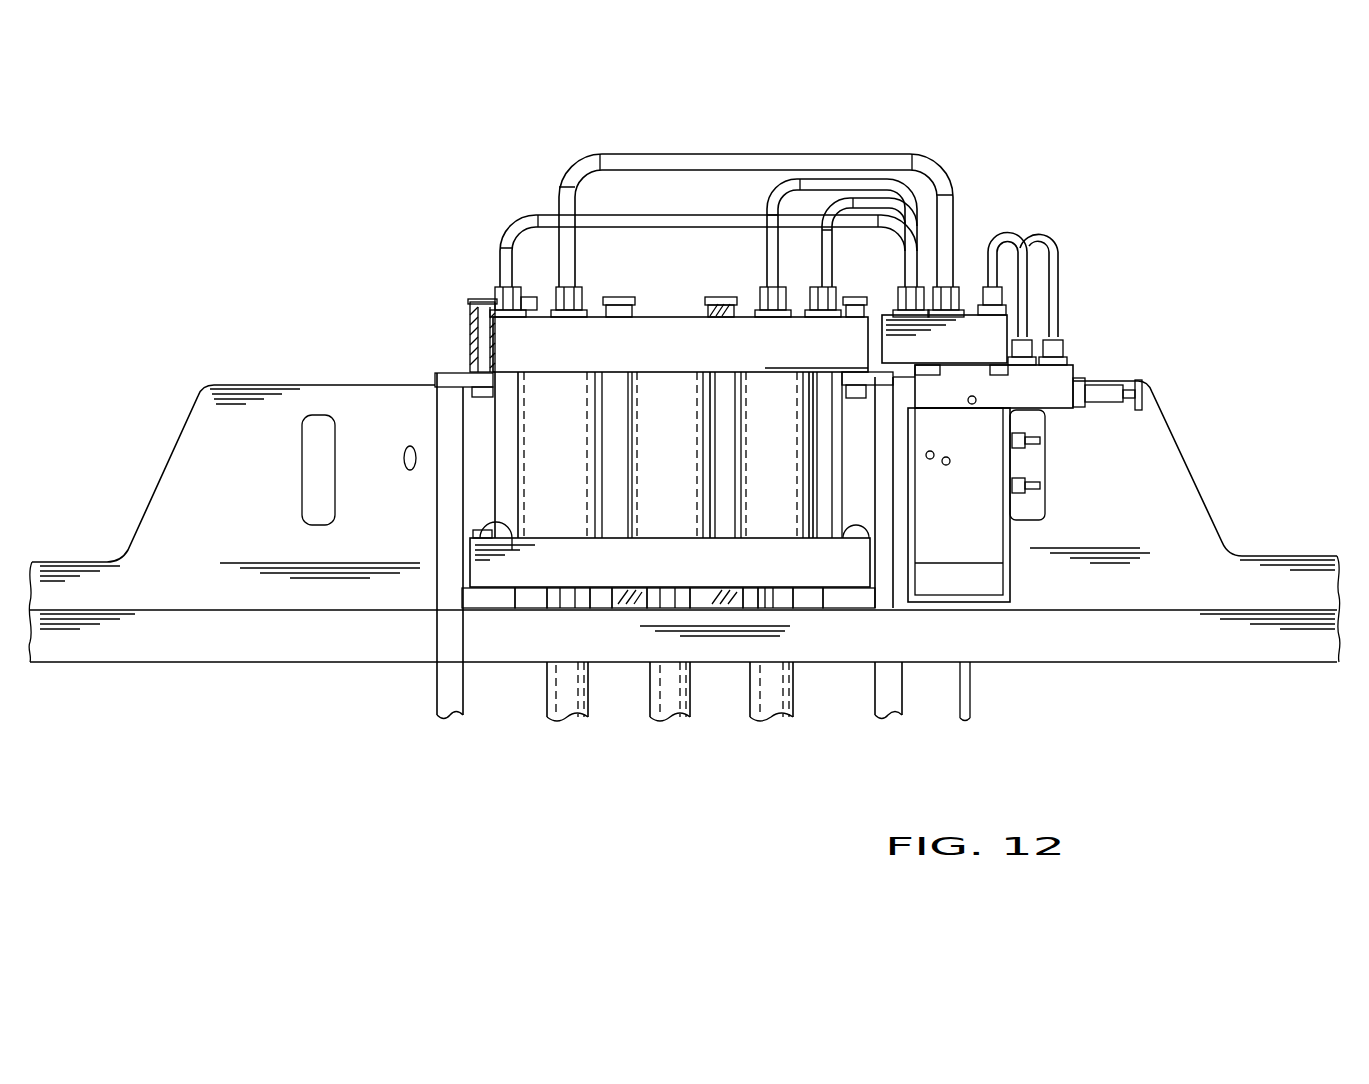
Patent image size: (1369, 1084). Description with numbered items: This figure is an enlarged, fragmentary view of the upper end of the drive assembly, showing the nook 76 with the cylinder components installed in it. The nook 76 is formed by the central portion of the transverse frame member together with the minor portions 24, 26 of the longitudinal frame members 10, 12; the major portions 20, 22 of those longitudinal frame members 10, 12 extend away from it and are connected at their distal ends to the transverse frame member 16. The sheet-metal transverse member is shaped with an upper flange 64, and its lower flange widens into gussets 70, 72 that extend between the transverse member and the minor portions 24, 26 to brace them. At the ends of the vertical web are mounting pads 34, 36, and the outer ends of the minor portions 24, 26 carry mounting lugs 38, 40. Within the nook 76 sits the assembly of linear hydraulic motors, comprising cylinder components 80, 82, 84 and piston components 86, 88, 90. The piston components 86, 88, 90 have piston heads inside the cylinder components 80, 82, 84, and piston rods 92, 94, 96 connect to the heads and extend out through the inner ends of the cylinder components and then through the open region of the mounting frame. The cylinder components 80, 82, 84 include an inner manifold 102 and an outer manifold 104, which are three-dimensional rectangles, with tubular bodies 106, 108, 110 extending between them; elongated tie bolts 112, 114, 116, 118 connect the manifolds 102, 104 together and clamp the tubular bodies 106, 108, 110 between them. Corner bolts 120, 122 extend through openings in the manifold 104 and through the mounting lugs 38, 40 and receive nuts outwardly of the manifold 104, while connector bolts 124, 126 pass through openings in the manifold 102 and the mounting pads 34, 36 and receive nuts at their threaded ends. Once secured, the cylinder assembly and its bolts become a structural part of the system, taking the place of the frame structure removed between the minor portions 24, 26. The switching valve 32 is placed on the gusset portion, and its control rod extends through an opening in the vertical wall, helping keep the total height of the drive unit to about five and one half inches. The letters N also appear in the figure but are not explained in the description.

The longitudinal frame member 10 is at (888, 723).
The longitudinal frame member 12 is at (447, 726).
The transverse frame member 16 is at (351, 667).
The major portion 20 is at (897, 697).
The major portion 22 is at (432, 690).
The minor portion 24 is at (893, 527).
The minor portion 26 is at (436, 548).
The switching valve 32 is at (993, 546).
The mounting pad 34 is at (862, 603).
The mounting pad 36 is at (500, 604).
The mounting lug 38 is at (888, 380).
The mounting lug 40 is at (462, 392).
The upper flange 64 is at (290, 640).
The gusset 70 is at (1158, 444).
The gusset 72 is at (268, 404).
The nook 76 is at (465, 442).
The cylinder component 80 is at (574, 480).
The cylinder component 82 is at (682, 507).
The cylinder component 84 is at (786, 492).
The piston component 86 is at (590, 680).
The piston component 88 is at (700, 702).
The piston component 90 is at (750, 710).
The piston rod 92 is at (563, 702).
The piston rod 94 is at (670, 707).
The piston rod 96 is at (772, 712).
The inner manifold 102 is at (644, 578).
The outer manifold 104 is at (604, 355).
The tubular body 106 is at (750, 433).
The tubular body 108 is at (697, 417).
The tubular body 110 is at (770, 522).
The tie bolt 112 is at (500, 490).
The tie bolt 114 is at (615, 390).
The tie bolt 116 is at (718, 392).
The tie bolt 118 is at (830, 388).
The corner bolt 120 is at (482, 358).
The corner bolt 122 is at (850, 297).
The connector bolt 124 is at (512, 536).
The connector bolt 126 is at (852, 536).
The neutral position N is at (470, 312).